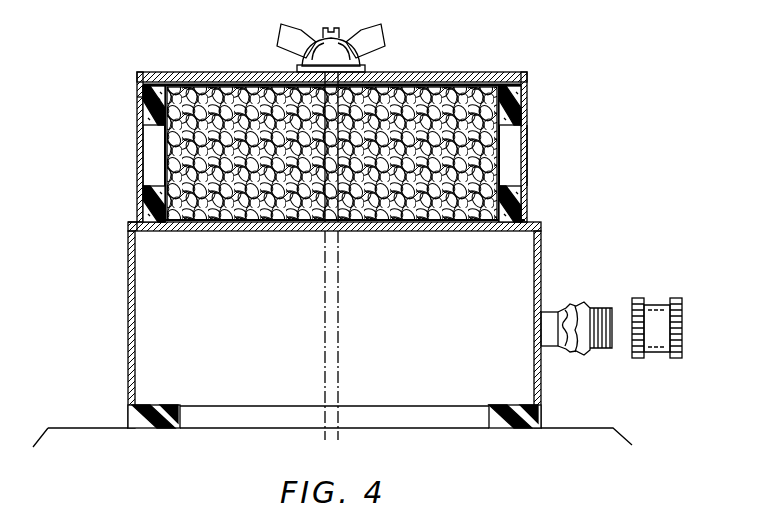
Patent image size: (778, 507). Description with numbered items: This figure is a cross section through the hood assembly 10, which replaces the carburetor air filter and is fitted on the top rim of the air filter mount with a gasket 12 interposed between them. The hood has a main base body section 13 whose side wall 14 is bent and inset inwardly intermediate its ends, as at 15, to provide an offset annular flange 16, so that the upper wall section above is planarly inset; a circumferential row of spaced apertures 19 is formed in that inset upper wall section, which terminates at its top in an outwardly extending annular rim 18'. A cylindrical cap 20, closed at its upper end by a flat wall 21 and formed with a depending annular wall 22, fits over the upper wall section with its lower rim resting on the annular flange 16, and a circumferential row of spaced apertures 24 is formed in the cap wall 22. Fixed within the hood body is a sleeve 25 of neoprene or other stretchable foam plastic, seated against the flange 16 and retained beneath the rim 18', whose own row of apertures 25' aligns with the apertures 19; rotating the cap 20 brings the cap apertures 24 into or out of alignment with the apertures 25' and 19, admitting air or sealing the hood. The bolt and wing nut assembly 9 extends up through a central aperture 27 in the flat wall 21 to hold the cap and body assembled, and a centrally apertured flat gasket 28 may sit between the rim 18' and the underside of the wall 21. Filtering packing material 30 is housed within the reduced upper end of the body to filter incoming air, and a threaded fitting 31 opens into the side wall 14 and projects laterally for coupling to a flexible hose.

The bolt and wing nut assembly 9 is at (343, 330).
The hood assembly 10 is at (590, 247).
The gasket 12 is at (128, 428).
The main base body section 13 is at (128, 272).
The side wall 14 is at (128, 230).
The bend 15 is at (132, 222).
The offset annular flange 16 is at (147, 232).
The outwardly extending annular rim 18' is at (338, 136).
The spaced apertures 19 is at (165, 147).
The cylindrical cap 20 is at (128, 96).
The flat wall 21 is at (447, 72).
The depending annular wall 22 is at (143, 190).
The spaced apertures 24 is at (545, 158).
The sleeve 25 is at (113, 104).
The spaced apertures 25' is at (110, 155).
The central aperture 27 is at (370, 72).
The centrally apertured flat gasket 28 is at (523, 122).
The filtering packing material 30 is at (383, 210).
The threaded fitting 31 is at (557, 313).